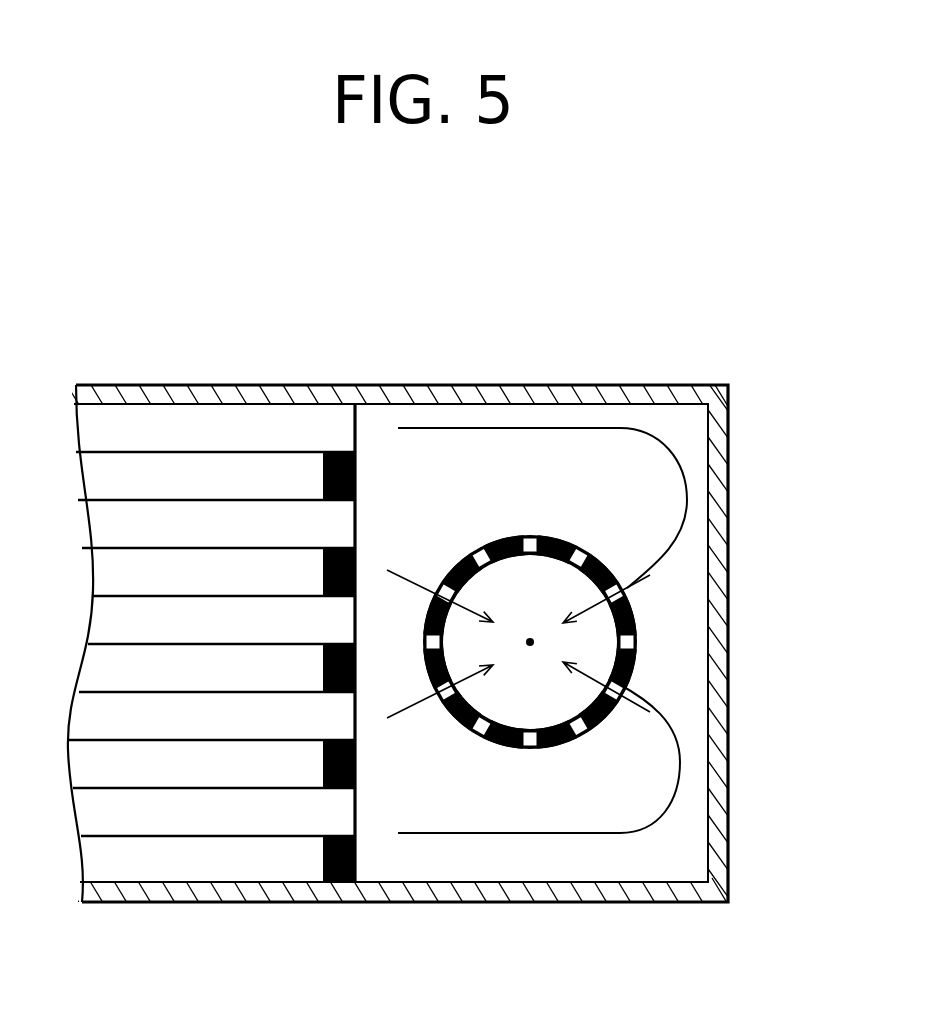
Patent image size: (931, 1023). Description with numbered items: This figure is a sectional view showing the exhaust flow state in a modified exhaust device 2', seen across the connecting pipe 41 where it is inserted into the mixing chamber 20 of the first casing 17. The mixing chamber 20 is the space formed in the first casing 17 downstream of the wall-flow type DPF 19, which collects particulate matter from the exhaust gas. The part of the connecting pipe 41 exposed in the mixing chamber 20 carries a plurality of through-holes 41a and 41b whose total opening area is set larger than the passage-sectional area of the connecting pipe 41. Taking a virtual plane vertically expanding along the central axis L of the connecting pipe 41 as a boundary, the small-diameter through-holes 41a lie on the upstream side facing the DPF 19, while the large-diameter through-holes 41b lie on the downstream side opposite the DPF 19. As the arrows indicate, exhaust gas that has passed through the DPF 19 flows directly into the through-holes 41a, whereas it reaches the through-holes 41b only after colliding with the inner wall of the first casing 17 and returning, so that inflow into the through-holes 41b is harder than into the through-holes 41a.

The apparatus (modified example) 2' is at (434, 599).
The first casing 17 is at (158, 893).
The DPF 19 is at (248, 853).
The mixing chamber 20 is at (462, 845).
The connecting pipe 41 is at (573, 540).
The small-diameter through-holes 41a is at (438, 583).
The large-diameter through-holes 41b is at (636, 592).
The central axis L is at (529, 652).